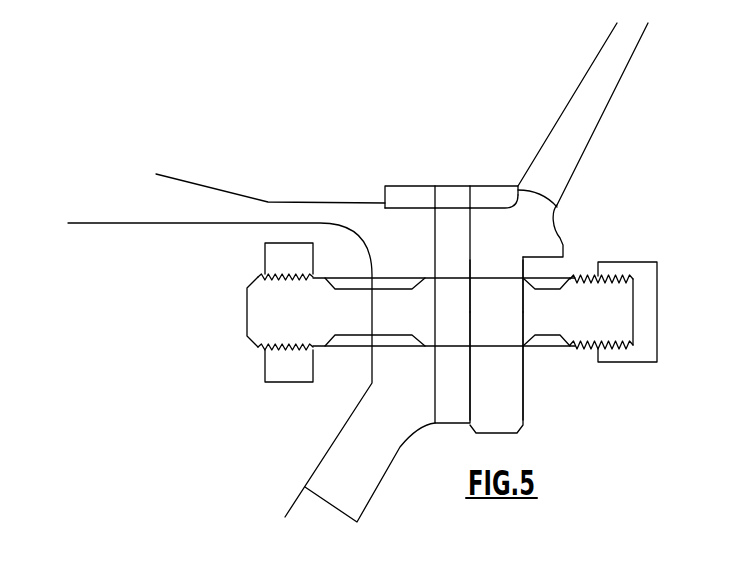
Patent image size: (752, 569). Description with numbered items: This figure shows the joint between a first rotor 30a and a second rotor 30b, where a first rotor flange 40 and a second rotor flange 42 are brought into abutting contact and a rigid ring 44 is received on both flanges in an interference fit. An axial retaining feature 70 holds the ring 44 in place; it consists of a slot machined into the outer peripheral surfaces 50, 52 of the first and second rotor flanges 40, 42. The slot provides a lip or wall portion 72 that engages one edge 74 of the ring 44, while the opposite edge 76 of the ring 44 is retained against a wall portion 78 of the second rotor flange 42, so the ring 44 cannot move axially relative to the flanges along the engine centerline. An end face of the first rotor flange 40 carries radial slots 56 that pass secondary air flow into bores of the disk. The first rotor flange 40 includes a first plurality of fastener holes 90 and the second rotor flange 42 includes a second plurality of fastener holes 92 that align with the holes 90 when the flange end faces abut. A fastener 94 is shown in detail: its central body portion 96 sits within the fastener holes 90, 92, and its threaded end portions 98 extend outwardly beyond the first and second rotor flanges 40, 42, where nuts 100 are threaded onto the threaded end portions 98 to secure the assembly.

The first rotor 30a is at (219, 203).
The second rotor 30b is at (588, 142).
The first rotor flange 40 is at (335, 468).
The second rotor flange 42 is at (510, 413).
The rigid ring 44 is at (487, 193).
The outer peripheral surface 50 is at (413, 209).
The outer peripheral surface 52 is at (485, 214).
The radial slots 56 is at (484, 265).
The axial retaining feature 70 is at (376, 191).
The lip or wall portion 72 is at (383, 204).
The edge 74 is at (384, 182).
The opposite edge 76 is at (526, 178).
The wall portion 78 is at (557, 208).
The first plurality of fastener holes 90 is at (395, 347).
The second plurality of fastener holes 92 is at (507, 389).
The fastener 94 is at (566, 276).
The central body portion 96 is at (507, 323).
The threaded end portions 98 is at (268, 307).
The nuts 100 is at (262, 363).